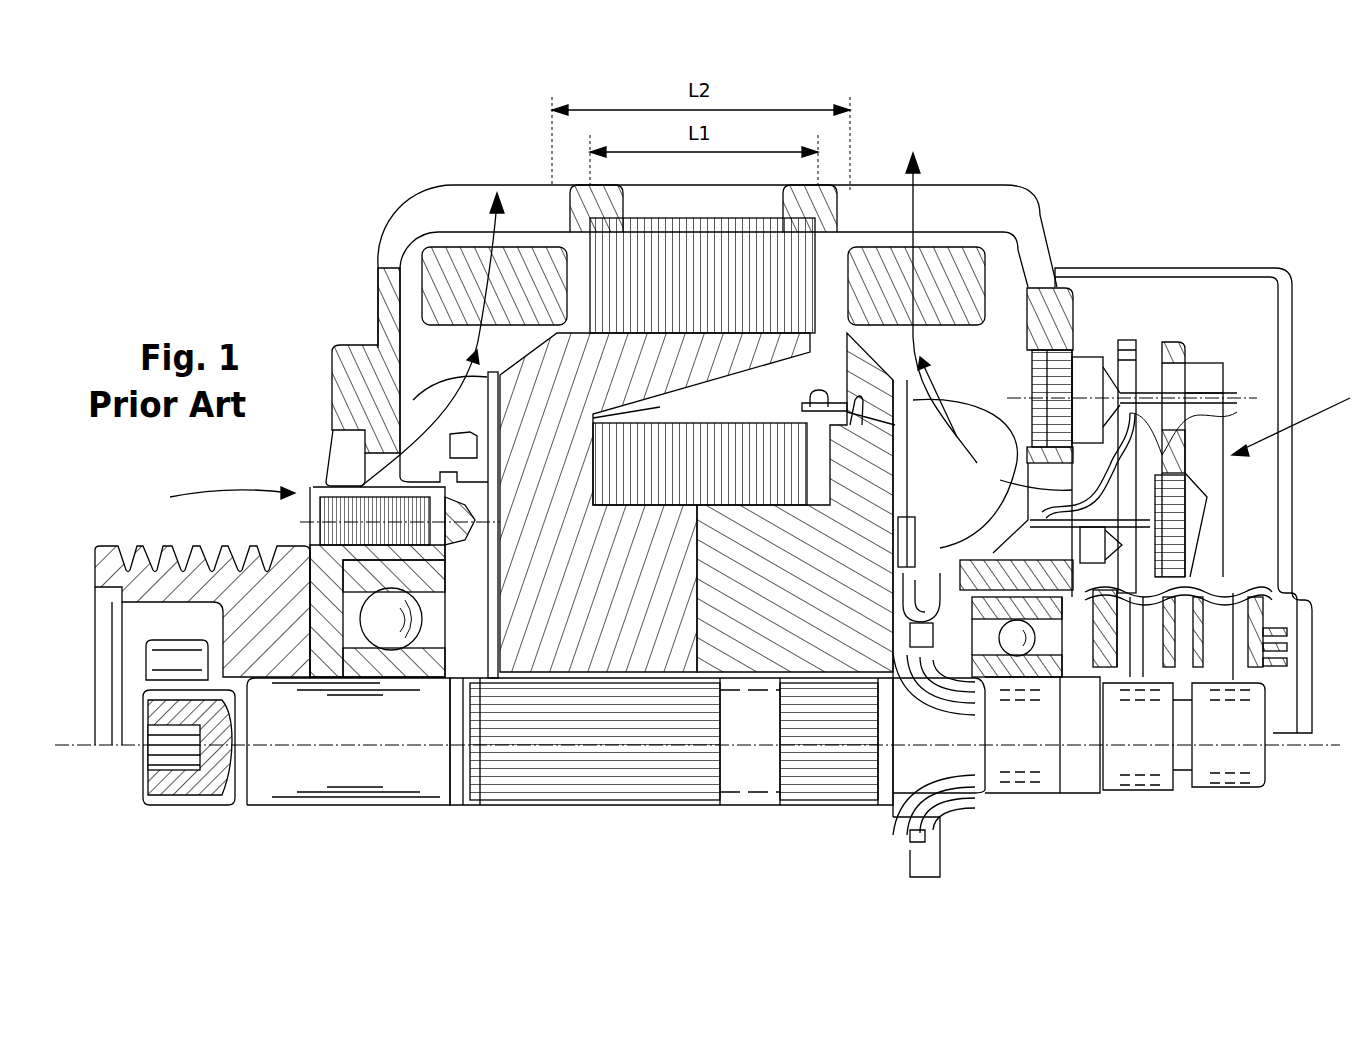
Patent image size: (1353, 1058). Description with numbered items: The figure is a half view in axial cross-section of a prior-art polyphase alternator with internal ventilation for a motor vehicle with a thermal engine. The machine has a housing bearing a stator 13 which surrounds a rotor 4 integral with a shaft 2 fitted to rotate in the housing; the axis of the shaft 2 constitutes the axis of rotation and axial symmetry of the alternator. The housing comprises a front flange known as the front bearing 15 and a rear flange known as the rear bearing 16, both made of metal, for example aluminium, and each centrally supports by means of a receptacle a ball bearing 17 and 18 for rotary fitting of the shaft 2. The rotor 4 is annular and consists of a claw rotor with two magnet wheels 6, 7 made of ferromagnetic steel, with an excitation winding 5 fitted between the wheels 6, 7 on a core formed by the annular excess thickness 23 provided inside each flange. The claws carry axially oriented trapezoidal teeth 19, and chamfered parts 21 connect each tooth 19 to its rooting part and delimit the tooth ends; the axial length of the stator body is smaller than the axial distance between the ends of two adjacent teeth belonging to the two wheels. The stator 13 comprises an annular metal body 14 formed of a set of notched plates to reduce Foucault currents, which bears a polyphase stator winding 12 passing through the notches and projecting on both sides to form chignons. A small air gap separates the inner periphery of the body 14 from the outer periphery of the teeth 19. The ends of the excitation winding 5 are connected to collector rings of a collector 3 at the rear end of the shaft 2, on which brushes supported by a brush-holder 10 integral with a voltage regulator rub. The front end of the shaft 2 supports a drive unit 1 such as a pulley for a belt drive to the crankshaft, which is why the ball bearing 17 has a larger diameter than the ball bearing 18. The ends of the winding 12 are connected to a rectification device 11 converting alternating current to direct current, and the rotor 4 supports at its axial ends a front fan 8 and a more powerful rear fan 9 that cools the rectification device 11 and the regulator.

The drive unit 1 is at (150, 548).
The shaft 2 is at (417, 808).
The collector 3 is at (1149, 800).
The rotor 4 is at (607, 625).
The excitation winding 5 is at (860, 372).
The magnet wheel 6 is at (543, 630).
The magnet wheel 7 is at (830, 630).
The front fan 8 is at (427, 417).
The rear fan 9 is at (1070, 355).
The brush-holder 10 is at (1256, 597).
The rectification device 11 is at (1103, 338).
The polyphase stator winding 12 is at (931, 252).
The stator 13 is at (640, 216).
The body 14 is at (738, 217).
The front bearing 15 is at (390, 295).
The rear bearing 16 is at (1037, 298).
The ball bearing 17 is at (362, 660).
The ball bearing 18 is at (1033, 665).
The teeth 19 is at (713, 370).
The chamfered parts 21 is at (753, 425).
The annular excess thickness 23 is at (655, 640).